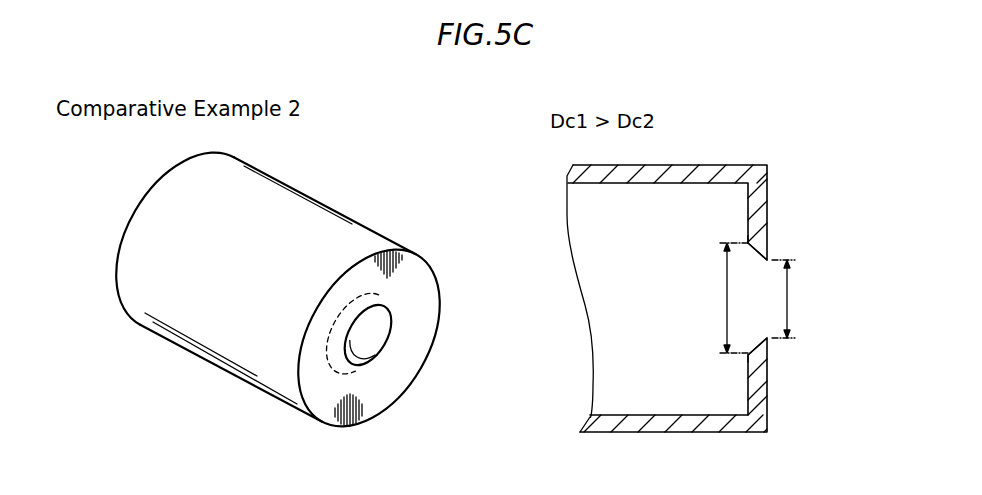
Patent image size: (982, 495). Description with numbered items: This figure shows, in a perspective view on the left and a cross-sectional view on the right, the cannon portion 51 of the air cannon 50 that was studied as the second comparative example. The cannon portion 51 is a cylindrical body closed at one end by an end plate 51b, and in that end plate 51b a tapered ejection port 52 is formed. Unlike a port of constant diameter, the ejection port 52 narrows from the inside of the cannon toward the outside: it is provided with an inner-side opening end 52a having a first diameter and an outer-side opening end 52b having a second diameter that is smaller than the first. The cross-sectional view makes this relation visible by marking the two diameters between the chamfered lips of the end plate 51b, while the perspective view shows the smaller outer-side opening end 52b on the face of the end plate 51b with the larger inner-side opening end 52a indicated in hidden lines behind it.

The air cannon 50 is at (342, 158).
The cannon portion 51 is at (350, 217).
The end plate 51b is at (428, 343).
The ejection port 52 is at (378, 338).
The inner-side opening end 52a is at (393, 327).
The outer-side opening end 52b is at (357, 406).